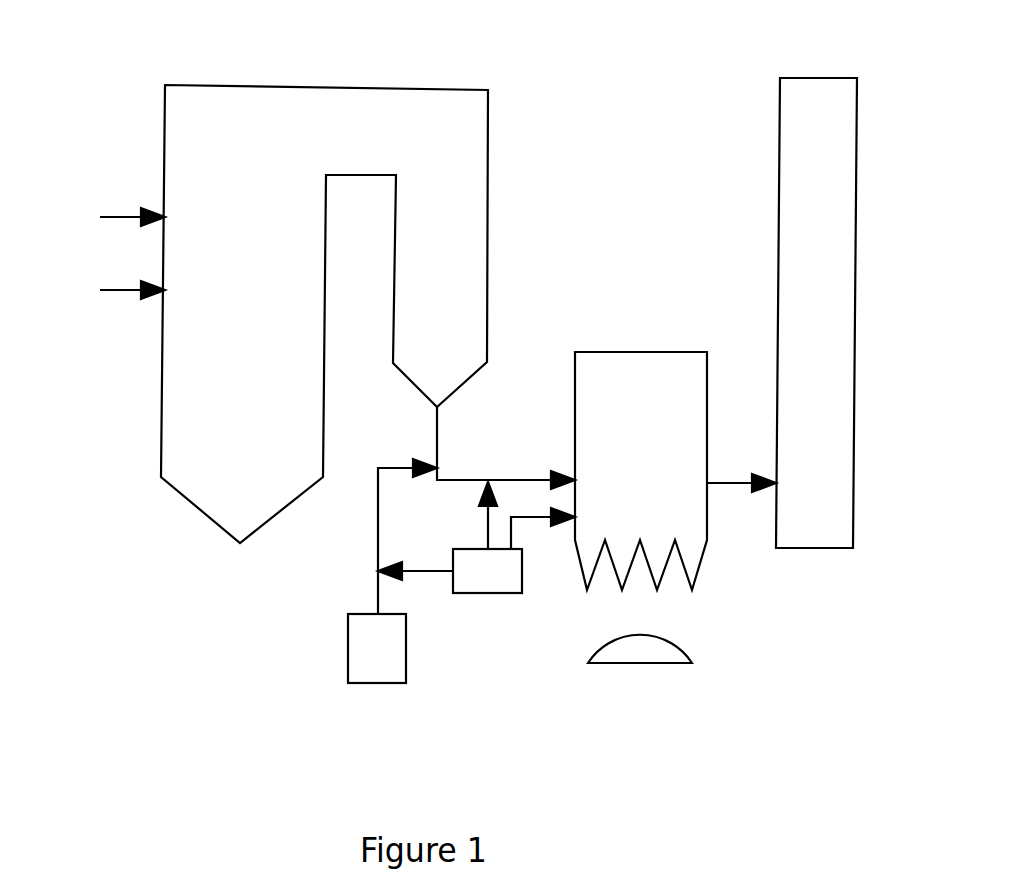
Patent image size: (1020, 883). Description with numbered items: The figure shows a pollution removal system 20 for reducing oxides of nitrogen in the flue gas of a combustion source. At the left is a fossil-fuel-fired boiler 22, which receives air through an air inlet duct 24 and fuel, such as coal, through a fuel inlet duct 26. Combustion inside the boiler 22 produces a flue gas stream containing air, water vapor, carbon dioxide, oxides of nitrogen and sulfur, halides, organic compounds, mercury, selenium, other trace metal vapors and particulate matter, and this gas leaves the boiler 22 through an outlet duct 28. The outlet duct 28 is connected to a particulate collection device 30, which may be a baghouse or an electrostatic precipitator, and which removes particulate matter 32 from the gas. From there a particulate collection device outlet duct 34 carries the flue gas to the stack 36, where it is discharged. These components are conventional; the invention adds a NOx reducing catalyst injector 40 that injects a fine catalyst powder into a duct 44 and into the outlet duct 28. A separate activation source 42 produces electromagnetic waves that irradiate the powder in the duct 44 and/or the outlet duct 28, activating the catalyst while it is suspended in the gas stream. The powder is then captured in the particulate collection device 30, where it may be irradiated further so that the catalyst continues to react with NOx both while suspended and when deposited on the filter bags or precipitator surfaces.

The pollution removal system 20 is at (616, 178).
The fossil-fuel-fired boiler 22 is at (203, 517).
The air inlet duct 24 is at (118, 215).
The fuel inlet duct 26 is at (118, 288).
The outlet duct 28 is at (434, 411).
The particulate collection device 30 is at (600, 351).
The particulate matter 32 is at (665, 640).
The particulate collection device outlet duct 34 is at (722, 481).
The stack 36 is at (798, 78).
The NOx reducing catalyst injector 40 is at (406, 627).
The activation source 42 is at (485, 593).
The duct 44 is at (378, 513).